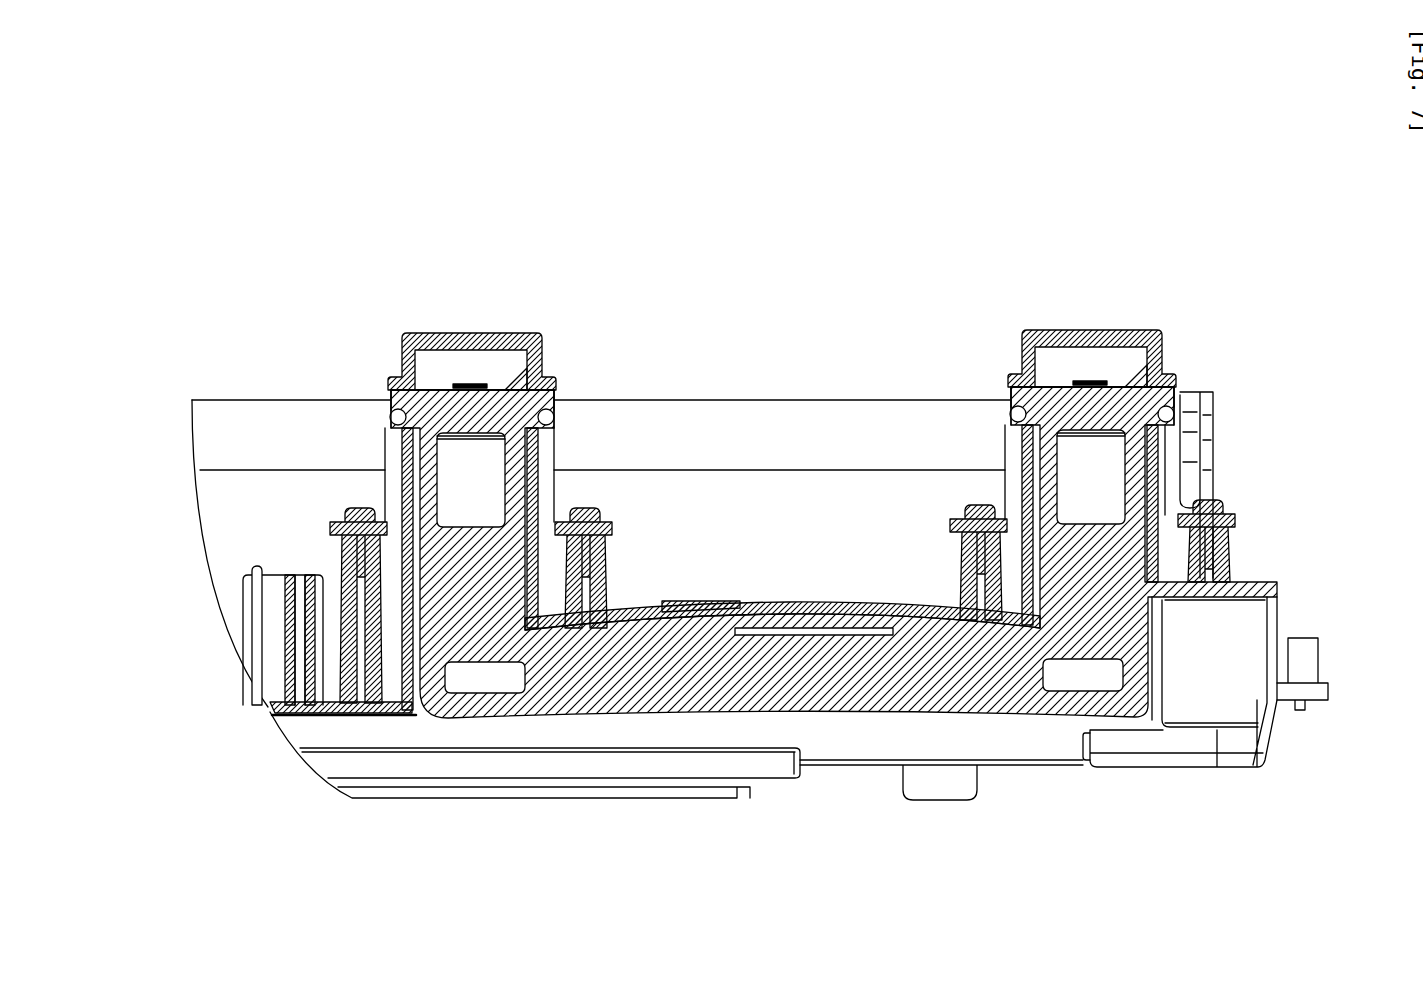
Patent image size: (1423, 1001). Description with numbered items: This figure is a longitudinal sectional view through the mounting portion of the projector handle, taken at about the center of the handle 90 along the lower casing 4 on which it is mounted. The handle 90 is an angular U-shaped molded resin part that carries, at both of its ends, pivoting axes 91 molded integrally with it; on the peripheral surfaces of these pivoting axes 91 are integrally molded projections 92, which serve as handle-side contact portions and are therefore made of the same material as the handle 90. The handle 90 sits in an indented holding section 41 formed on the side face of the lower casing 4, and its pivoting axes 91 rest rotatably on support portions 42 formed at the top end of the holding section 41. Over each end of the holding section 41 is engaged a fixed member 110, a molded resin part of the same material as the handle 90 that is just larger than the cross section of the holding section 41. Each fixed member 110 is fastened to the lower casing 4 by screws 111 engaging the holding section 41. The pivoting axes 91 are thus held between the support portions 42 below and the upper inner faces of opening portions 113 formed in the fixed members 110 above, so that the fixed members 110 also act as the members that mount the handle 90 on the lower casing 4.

The lower casing 4 is at (818, 408).
The holding section 41 is at (428, 712).
The support portions 42 is at (392, 413).
The handle 90 is at (857, 712).
The pivoting axes 91 is at (542, 357).
The projections 92 is at (474, 384).
The fixed members 110 is at (436, 334).
The screws 111 is at (358, 521).
The opening portions 113 is at (390, 449).